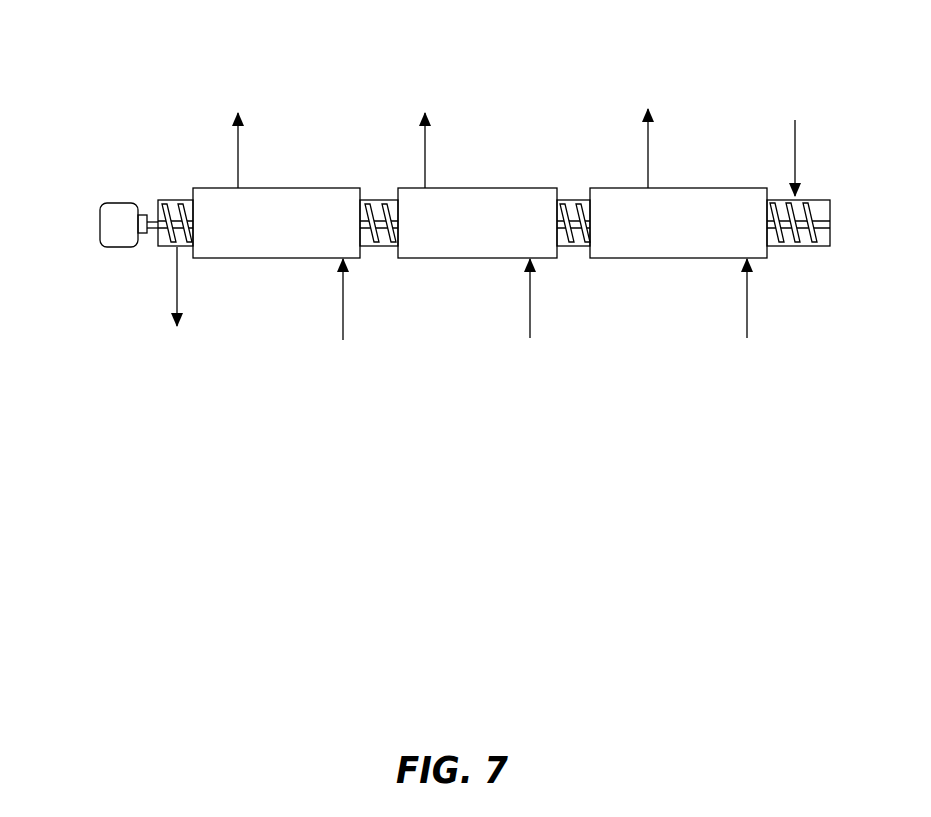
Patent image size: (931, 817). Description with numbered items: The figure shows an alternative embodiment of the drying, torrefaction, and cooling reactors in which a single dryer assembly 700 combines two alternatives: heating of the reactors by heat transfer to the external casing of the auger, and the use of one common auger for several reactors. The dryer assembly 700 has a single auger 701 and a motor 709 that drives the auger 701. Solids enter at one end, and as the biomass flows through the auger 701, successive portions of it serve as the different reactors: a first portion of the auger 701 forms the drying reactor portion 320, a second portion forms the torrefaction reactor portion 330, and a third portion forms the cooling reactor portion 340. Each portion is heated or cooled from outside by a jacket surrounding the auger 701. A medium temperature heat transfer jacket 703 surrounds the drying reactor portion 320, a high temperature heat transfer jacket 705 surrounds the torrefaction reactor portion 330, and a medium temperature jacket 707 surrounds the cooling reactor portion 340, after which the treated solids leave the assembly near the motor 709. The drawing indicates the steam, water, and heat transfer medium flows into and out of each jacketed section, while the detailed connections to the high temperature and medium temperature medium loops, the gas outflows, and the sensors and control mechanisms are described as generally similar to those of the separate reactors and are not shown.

The dryer assembly 700 is at (143, 166).
The auger 701 is at (379, 193).
The medium temperature heat transfer jacket 703 is at (678, 223).
The high temperature heat transfer jacket 705 is at (477, 223).
The medium temperature jacket 707 is at (276, 223).
The motor 709 is at (98, 226).
The drying reactor portion 320 is at (690, 67).
The torrefaction reactor portion 330 is at (467, 67).
The cooling reactor portion 340 is at (240, 67).